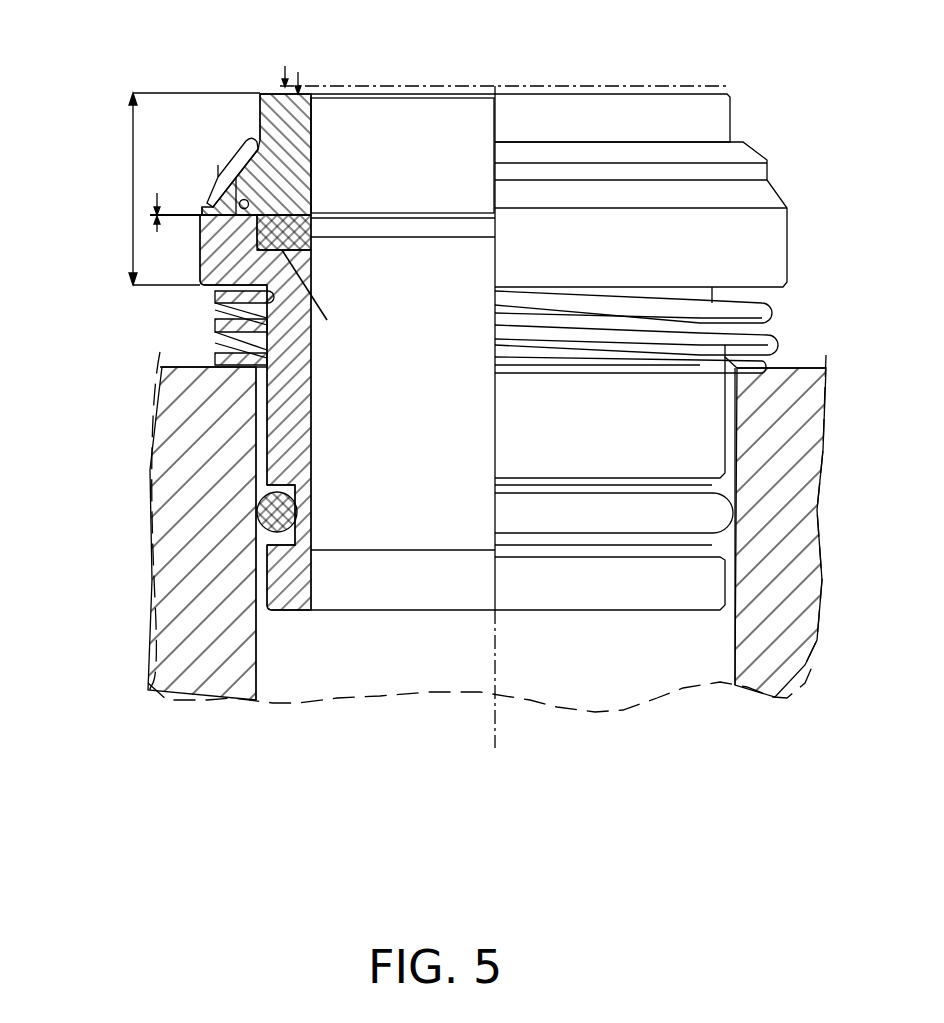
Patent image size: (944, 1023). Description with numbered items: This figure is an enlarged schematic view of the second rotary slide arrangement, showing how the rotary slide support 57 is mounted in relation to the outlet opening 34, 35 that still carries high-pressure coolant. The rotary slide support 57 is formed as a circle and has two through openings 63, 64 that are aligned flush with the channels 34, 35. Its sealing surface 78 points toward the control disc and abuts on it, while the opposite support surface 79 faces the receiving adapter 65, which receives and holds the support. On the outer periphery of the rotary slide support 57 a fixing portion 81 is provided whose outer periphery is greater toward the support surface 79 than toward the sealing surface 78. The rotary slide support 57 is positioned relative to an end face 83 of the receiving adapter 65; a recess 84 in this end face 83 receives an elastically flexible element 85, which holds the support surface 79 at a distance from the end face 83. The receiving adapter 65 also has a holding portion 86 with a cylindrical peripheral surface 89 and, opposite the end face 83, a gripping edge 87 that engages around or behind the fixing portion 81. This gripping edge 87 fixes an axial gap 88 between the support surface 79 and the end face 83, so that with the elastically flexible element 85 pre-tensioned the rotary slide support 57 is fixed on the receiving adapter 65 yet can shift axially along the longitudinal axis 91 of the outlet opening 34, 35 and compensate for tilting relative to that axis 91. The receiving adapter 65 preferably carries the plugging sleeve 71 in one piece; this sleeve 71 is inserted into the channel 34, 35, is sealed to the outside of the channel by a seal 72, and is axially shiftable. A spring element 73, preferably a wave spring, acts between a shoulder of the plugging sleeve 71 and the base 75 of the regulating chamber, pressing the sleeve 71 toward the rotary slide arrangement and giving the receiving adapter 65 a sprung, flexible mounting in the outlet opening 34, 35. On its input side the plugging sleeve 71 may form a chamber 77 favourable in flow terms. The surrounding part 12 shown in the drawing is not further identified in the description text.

The housing 12 is at (150, 468).
The channel 34 is at (481, 728).
The channel 35 is at (387, 660).
The rotary slide support 57 is at (268, 115).
The through opening 63 is at (544, 352).
The through opening 64 is at (440, 468).
The receiving adapter 65 is at (806, 228).
The plugging sleeve 71 is at (258, 520).
The seal 72 is at (290, 548).
The spring element 73 is at (196, 330).
The base of the regulating chamber 75 is at (162, 367).
The chamber 77 is at (200, 485).
The sealing surface 78 is at (280, 93).
The support surface 79 is at (313, 240).
The fixing portion 81 is at (235, 188).
The end face 83 is at (230, 227).
The recess 84 is at (305, 245).
The elastically flexible element 85 is at (327, 320).
The holding portion 86 is at (205, 168).
The gripping edge 87 is at (245, 150).
The axial gap 88 is at (153, 218).
The cylindrical peripheral surface 89 is at (240, 204).
The longitudinal axis 91 is at (495, 737).